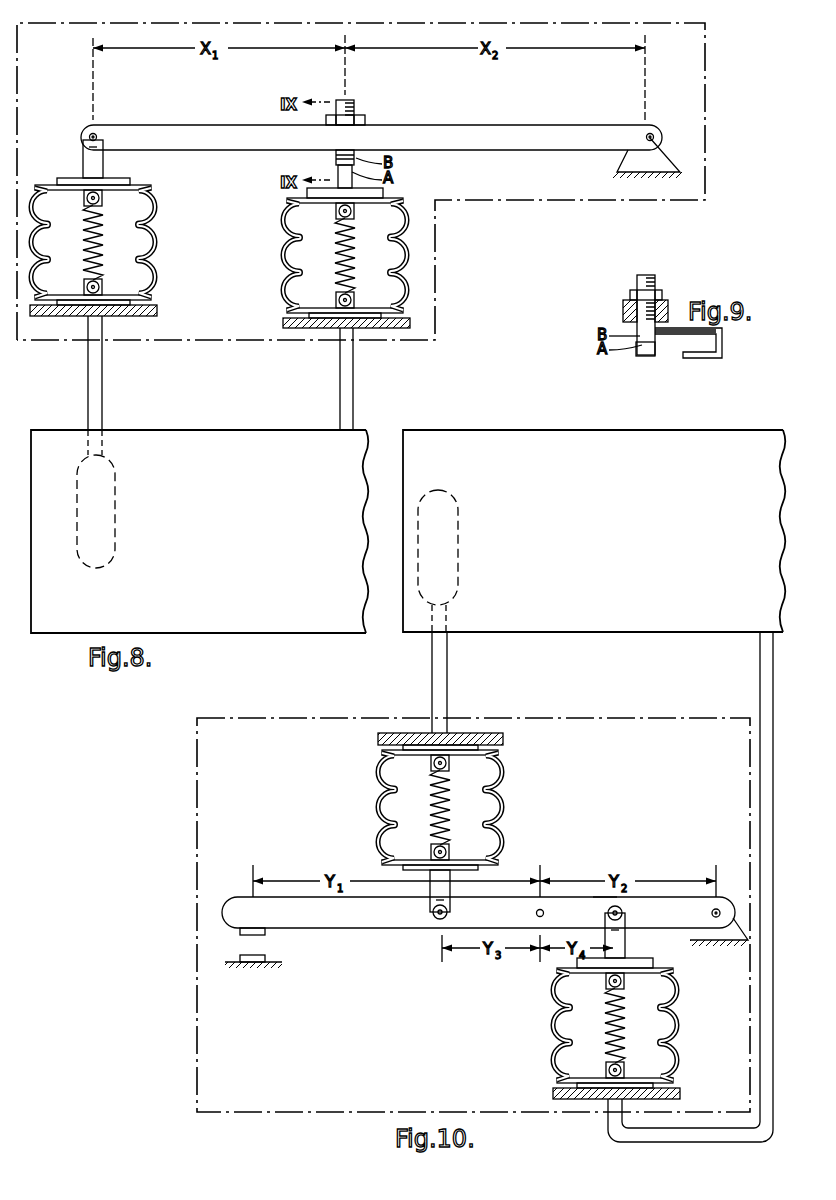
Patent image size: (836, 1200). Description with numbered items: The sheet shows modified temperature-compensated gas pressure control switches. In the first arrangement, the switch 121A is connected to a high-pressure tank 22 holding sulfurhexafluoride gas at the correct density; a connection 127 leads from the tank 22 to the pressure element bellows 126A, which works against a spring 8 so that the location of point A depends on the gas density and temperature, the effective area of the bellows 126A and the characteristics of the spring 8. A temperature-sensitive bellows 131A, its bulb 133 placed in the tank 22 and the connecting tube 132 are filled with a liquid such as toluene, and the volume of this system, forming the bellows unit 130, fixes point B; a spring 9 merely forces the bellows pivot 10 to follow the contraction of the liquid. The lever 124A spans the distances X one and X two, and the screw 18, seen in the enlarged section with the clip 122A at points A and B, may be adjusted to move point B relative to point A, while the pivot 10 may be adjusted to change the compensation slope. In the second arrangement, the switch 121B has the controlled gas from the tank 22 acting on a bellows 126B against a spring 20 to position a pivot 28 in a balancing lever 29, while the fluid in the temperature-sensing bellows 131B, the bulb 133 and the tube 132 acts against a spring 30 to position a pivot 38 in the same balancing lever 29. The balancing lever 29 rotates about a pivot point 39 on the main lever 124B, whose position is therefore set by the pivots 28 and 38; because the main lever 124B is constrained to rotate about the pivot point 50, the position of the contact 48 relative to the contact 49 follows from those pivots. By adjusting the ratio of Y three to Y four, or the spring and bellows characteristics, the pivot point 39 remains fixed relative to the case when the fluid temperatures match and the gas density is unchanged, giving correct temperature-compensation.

In FIG. 8, the spring 8 is at (334, 242).
In FIG. 8, the spring 9 is at (82, 231).
In FIG. 8, the bellows pivot 10 is at (97, 137).
In FIG. 8, the screw 18 is at (354, 105).
In FIG. 9, the screw 18 is at (645, 280).
In FIG. 10, the spring 20 is at (625, 1009).
In FIG. 8, the high-pressure tank 22 is at (242, 633).
In FIG. 10, the high-pressure tank 22 is at (548, 632).
In FIG. 10, the pivot 28 is at (627, 917).
In FIG. 10, the balancing lever 29 is at (605, 897).
In FIG. 10, the spring 30 is at (432, 803).
In FIG. 10, the pivot 38 is at (433, 914).
In FIG. 10, the pivot point 39 is at (536, 915).
In FIG. 10, the contact 48 is at (262, 937).
In FIG. 10, the contact 49 is at (268, 962).
In FIG. 10, the pivot point 50 is at (714, 912).
In FIG. 8, the temperature-compensated gas pressure control switch 121A is at (436, 315).
In FIG. 10, the switch 121B is at (197, 775).
In FIG. 9, the clip 122A is at (683, 355).
In FIG. 8, the lever 124A is at (455, 125).
In FIG. 9, the lever 124A is at (624, 318).
In FIG. 10, the main lever 124B is at (395, 937).
In FIG. 8, the pressure element bellows 126A is at (284, 262).
In FIG. 10, the bellows 126B is at (680, 1032).
In FIG. 8, the connection 127 is at (340, 388).
In FIG. 10, the connection 127 is at (760, 697).
In FIG. 8, the bellows unit 130 is at (200, 219).
In FIG. 10, the bellows unit 130 is at (363, 791).
In FIG. 8, the temperature-sensitive bellows 131A is at (157, 252).
In FIG. 10, the temperature-sensing element bellows 131B is at (504, 811).
In FIG. 8, the connecting tube 132 is at (102, 388).
In FIG. 10, the connecting tube 132 is at (448, 692).
In FIG. 8, the bulb 133 is at (116, 485).
In FIG. 10, the bulb 133 is at (459, 518).